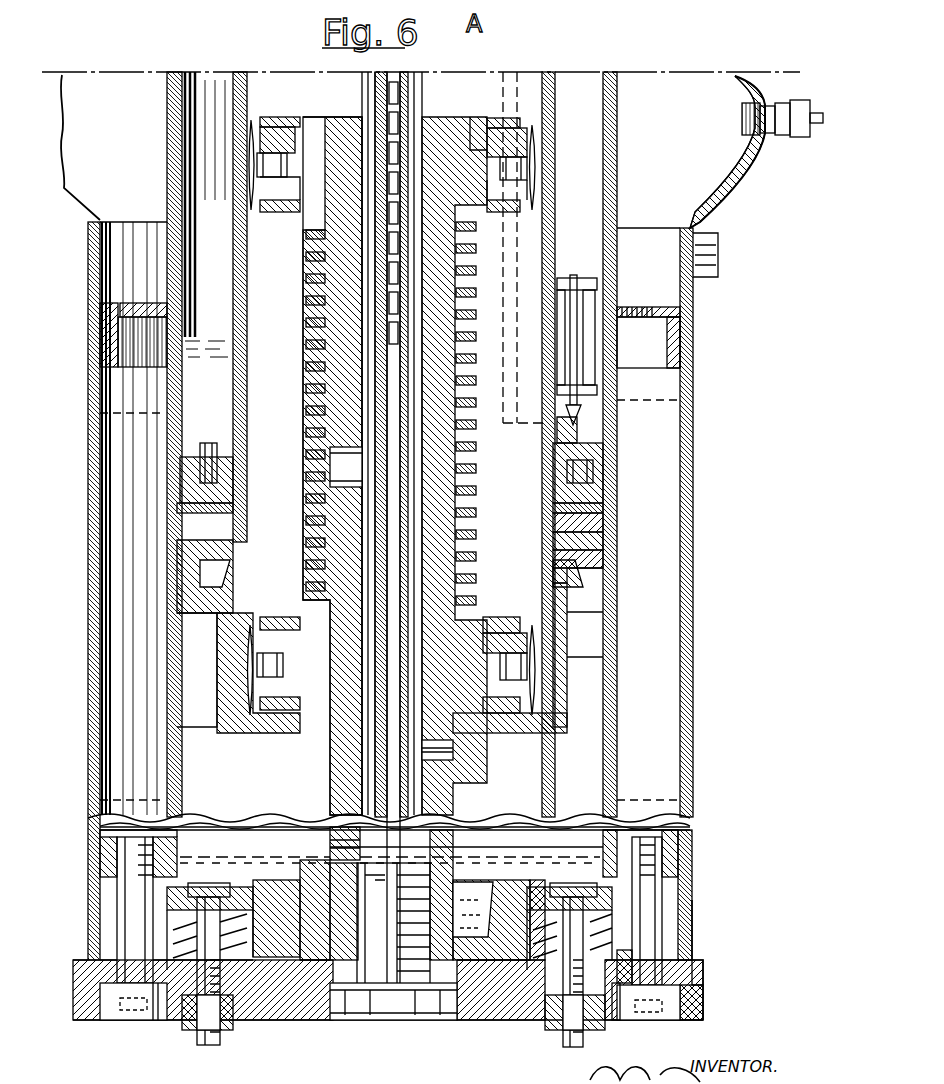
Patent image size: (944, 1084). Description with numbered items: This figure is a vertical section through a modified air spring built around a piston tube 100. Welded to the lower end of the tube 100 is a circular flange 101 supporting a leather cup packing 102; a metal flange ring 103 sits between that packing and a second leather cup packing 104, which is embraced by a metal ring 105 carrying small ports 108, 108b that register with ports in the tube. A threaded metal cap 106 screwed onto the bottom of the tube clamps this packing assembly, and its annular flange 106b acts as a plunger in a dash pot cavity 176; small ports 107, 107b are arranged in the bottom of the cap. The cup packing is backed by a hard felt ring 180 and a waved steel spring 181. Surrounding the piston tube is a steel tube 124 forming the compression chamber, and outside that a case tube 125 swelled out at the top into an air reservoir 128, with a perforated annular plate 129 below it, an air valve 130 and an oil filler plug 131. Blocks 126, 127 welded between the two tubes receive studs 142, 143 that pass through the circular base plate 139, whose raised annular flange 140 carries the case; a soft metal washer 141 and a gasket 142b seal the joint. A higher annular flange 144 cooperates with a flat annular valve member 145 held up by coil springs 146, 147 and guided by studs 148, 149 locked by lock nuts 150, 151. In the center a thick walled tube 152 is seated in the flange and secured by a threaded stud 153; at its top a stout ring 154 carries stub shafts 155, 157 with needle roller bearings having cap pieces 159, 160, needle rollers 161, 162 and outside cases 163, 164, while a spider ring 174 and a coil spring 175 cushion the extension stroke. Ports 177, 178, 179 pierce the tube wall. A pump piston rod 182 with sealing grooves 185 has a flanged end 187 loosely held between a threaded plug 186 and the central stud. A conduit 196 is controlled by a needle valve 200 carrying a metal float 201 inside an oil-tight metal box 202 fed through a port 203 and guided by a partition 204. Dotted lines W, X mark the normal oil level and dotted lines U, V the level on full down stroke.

The metal tube 100 is at (548, 105).
The circular flange 101 is at (235, 470).
The leather cup packing 102 is at (605, 490).
The metal flange ring 103 is at (605, 520).
The leather cup packing 104 is at (605, 550).
The metal ring 105 is at (605, 590).
The metal cap 106 is at (570, 660).
The annular flange 106b is at (470, 768).
The small port 107 is at (520, 735).
The small port 107b is at (262, 733).
The small port 108 is at (553, 575).
The small port 108b is at (233, 572).
The circular steel tube 124 is at (617, 157).
The circular tube 125 is at (695, 578).
The block 126 is at (694, 850).
The block 127 is at (100, 858).
The air reservoir 128 is at (103, 147).
The perforated annular plate 129 is at (110, 300).
The air valve 130 is at (800, 138).
The oil filler plug 131 is at (720, 258).
The circular base plate 139 is at (495, 1022).
The raised annular flange 140 is at (693, 940).
The soft metal washer 141 is at (705, 960).
The stud 142 is at (690, 1020).
The gasket 142b is at (705, 985).
The stud 143 is at (115, 1013).
The annular flange 144 is at (537, 880).
The flat annular valve member 145 is at (665, 890).
The coil spring 146 is at (612, 920).
The coil spring 147 is at (170, 928).
The stud 148 is at (210, 830).
The stud 149 is at (630, 1022).
The lock nut 150 is at (560, 1035).
The lock nut 151 is at (192, 1027).
The thick walled tube 152 is at (455, 338).
The threaded stud 153 is at (385, 1020).
The stout ring 154 is at (338, 118).
The stub shaft 155 is at (258, 145).
The stub shaft 157 is at (500, 115).
The cap piece 159 is at (250, 180).
The cap piece 160 is at (528, 170).
The needle rollers 161 is at (283, 214).
The needle rollers 162 is at (535, 150).
The outside case 163 is at (278, 115).
The outside case 164 is at (522, 122).
The spider ring 174 is at (500, 617).
The coil spring 175 is at (478, 530).
The cavity 176 is at (292, 875).
The port 177 is at (328, 476).
The port 178 is at (440, 760).
The port 179 is at (332, 850).
The circular hard felt ring 180 is at (180, 465).
The waved circular steel spring 181 is at (208, 440).
The piston rod 182 is at (395, 797).
The sealing grooves 185 is at (332, 285).
The threaded plug 186 is at (505, 830).
The flanged end 187 is at (470, 880).
The conduit 196 is at (522, 210).
The needle valve 200 is at (568, 290).
The metal float 201 is at (605, 335).
The metal box 202 is at (585, 290).
The port 203 is at (615, 305).
The partition 204 is at (560, 440).
The dotted line U is at (110, 413).
The dotted line V is at (690, 400).
The dotted line W is at (100, 803).
The dotted line X is at (680, 798).